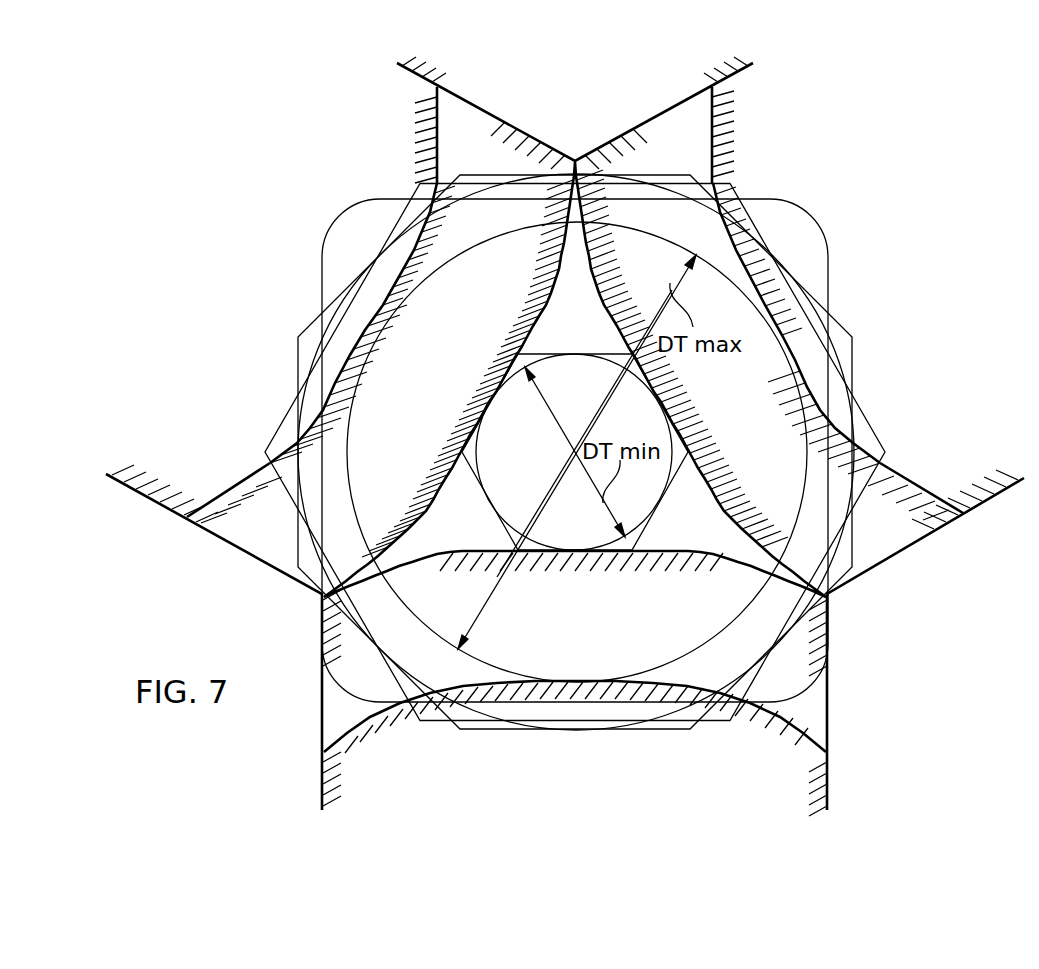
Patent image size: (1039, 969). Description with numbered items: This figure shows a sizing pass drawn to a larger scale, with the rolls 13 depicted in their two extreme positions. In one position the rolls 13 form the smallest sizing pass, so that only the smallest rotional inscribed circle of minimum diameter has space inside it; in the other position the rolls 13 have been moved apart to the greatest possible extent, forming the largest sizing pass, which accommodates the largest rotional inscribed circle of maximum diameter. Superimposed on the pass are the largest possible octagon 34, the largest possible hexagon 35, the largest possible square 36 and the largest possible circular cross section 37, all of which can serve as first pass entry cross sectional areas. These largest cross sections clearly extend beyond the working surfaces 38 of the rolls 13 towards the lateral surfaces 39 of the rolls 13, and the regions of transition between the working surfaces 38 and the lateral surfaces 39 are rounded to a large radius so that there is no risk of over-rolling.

The rolls 13 is at (967, 473).
The octagon 34 is at (840, 323).
The hexagon 35 is at (753, 220).
The square 36 is at (825, 237).
The circular cross section 37 is at (843, 352).
The working surfaces 38 is at (408, 268).
The lateral surfaces 39 is at (440, 150).